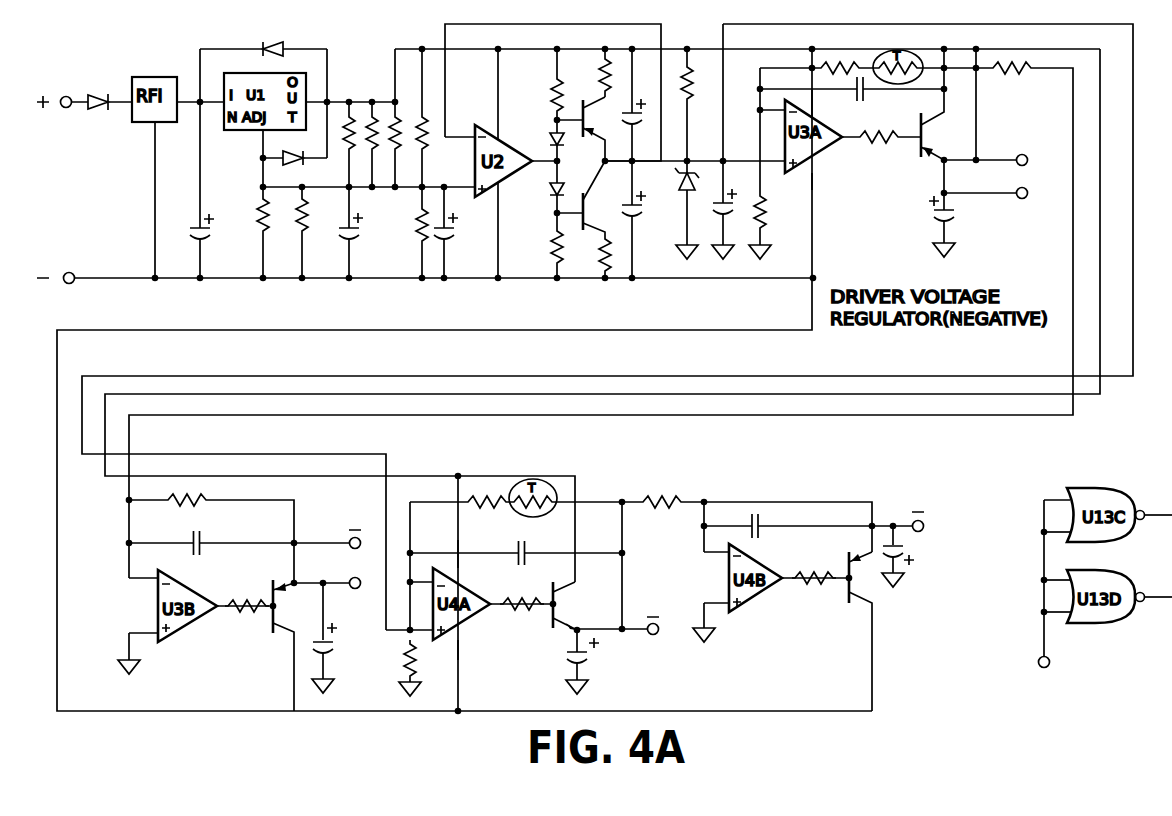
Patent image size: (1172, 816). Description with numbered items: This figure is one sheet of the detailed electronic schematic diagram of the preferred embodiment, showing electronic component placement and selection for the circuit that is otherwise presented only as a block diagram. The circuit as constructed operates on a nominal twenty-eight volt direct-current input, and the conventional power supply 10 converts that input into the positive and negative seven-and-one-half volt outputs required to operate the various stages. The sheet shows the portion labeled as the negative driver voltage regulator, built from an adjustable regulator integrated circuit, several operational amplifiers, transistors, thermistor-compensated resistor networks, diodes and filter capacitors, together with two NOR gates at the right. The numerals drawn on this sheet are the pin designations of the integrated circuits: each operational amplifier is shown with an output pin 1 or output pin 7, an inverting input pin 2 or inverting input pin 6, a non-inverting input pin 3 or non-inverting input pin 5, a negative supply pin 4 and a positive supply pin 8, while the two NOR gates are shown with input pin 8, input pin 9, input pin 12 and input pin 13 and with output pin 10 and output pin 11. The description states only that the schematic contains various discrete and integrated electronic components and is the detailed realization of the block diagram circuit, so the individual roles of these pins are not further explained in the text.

The op amp output pin 1 is at (670, 359).
The op amp inverting input pin 2 is at (597, 337).
The op amp non-inverting input pin 3 is at (585, 387).
The op amp negative supply pin 4 is at (625, 413).
The op amp non-inverting input pin 5 is at (429, 604).
The op amp inverting input / output pin 6 is at (429, 359).
The op amp output / positive supply pin 7 is at (497, 358).
The op amp positive supply / NOR gate input pin 8 is at (756, 333).
The NOR gate U13C input pin 9 is at (1057, 521).
The power supply 10 is at (1159, 503).
The NOR gate U13D output pin 11 is at (1159, 585).
The NOR gate U13D input pin 12 is at (1057, 568).
The NOR gate U13D input pin 13 is at (1057, 600).